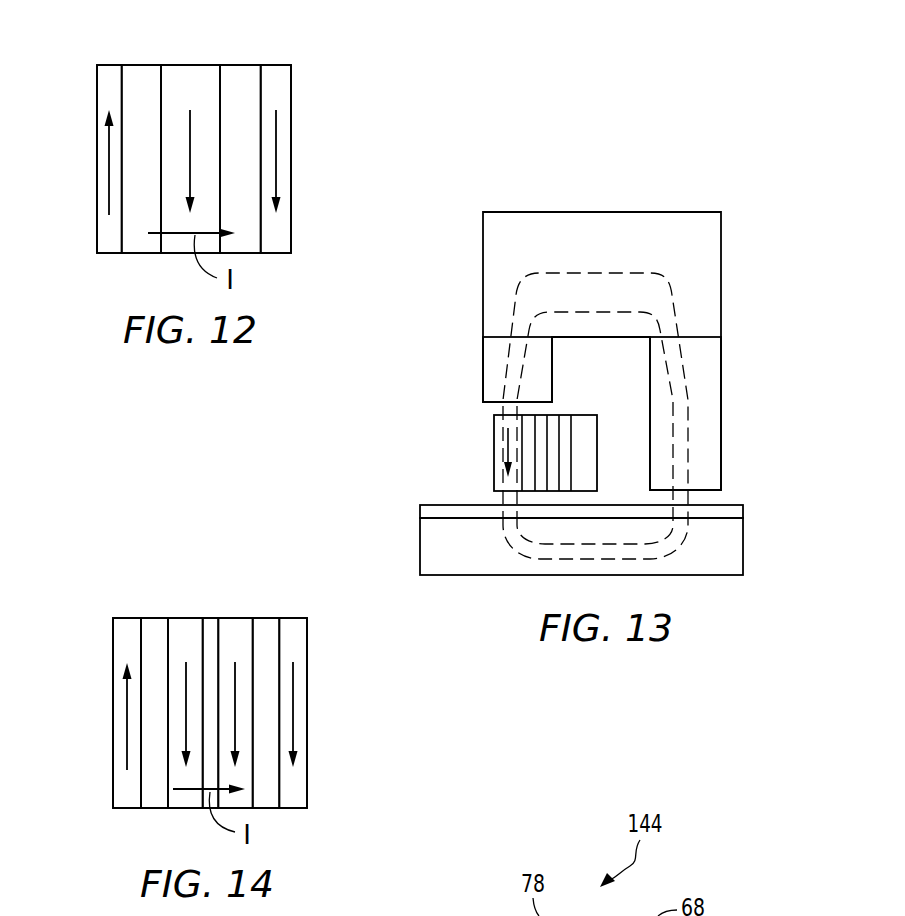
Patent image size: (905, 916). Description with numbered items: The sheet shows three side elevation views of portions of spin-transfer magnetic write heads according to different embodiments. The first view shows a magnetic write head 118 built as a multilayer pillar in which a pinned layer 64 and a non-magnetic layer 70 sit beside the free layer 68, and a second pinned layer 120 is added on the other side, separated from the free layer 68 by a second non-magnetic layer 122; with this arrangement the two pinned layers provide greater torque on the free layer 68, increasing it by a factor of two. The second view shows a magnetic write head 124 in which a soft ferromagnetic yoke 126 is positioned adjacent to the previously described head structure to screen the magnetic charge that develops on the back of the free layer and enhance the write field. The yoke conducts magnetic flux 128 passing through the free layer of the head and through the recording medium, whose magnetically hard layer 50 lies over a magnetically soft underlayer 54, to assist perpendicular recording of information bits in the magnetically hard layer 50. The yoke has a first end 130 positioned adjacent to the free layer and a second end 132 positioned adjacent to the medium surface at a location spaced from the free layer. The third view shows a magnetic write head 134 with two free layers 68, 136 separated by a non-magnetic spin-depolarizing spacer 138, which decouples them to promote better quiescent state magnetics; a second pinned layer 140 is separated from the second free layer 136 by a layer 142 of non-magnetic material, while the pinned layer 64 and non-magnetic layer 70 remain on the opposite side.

In FIG. 12, the magnetic write head 118 is at (306, 165).
In FIG. 12, the second pinned layer 120 is at (112, 73).
In FIG. 12, the second non-magnetic layer 122 is at (138, 72).
In FIG. 12, the free layer 68 is at (193, 72).
In FIG. 14, the free layer 68 is at (237, 625).
In FIG. 12, the non-magnetic layer 70 is at (240, 72).
In FIG. 14, the non-magnetic layer 70 is at (265, 808).
In FIG. 12, the pinned layer 64 is at (275, 72).
In FIG. 14, the pinned layer 64 is at (298, 783).
In FIG. 13, the magnetic write head 124 is at (763, 362).
In FIG. 13, the ferromagnetic yoke 126 is at (712, 249).
In FIG. 13, the magnetic flux 128 is at (506, 450).
In FIG. 13, the first end 130 is at (488, 403).
In FIG. 13, the second end 132 is at (715, 493).
In FIG. 13, the magnetically hard layer 50 is at (740, 514).
In FIG. 13, the magnetically soft underlayer 54 is at (740, 557).
In FIG. 14, the magnetic write head 134 is at (350, 714).
In FIG. 14, the second free layer 136 is at (183, 625).
In FIG. 14, the non-magnetic spin-depolarizing spacer 138 is at (208, 623).
In FIG. 14, the second pinned layer 140 is at (123, 787).
In FIG. 14, the layer of non-magnetic material 142 is at (154, 803).